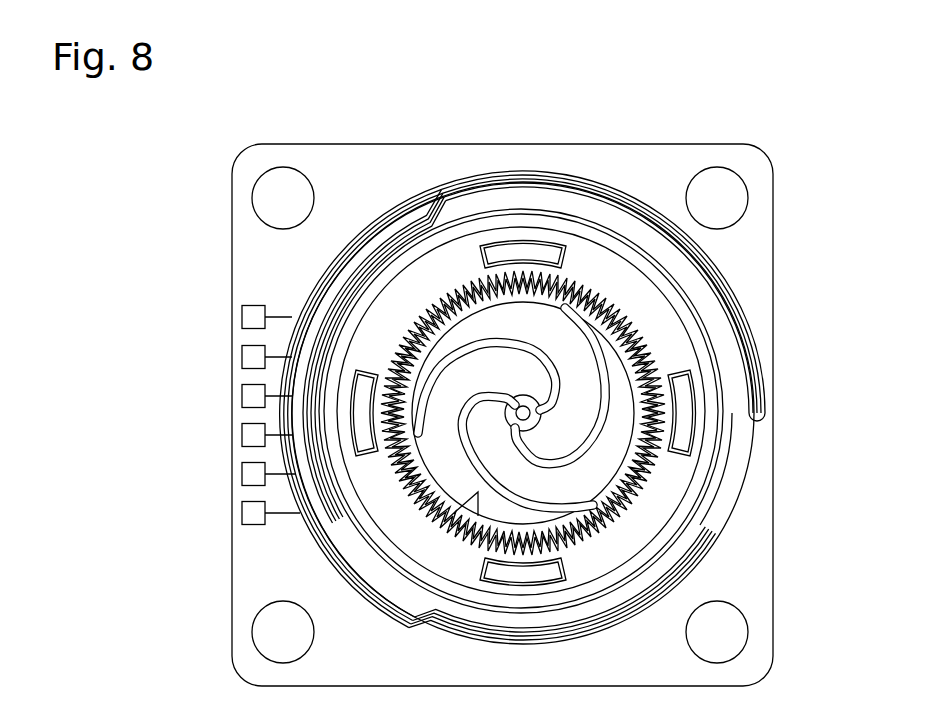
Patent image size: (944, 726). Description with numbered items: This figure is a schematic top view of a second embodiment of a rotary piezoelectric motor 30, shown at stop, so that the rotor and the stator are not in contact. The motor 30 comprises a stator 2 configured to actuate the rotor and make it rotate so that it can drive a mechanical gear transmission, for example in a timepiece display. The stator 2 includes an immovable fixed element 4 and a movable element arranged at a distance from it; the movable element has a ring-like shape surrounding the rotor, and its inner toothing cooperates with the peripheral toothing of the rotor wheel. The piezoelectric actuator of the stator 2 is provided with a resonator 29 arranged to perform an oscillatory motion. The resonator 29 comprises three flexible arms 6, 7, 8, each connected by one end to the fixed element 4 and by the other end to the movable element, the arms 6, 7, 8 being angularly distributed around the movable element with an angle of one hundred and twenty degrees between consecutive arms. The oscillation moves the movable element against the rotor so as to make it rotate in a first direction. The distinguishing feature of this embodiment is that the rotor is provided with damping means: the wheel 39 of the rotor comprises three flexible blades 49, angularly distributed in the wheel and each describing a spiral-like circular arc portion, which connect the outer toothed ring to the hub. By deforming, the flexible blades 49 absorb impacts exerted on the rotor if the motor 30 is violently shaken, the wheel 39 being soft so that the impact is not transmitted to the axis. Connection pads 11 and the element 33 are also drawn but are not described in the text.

The stator 2 is at (448, 130).
The fixed element 4 is at (521, 152).
The flexible arm 6 is at (518, 640).
The flexible arm 7 is at (743, 421).
The flexible arm 8 is at (560, 207).
The connection pads 11 is at (242, 513).
The resonator 29 is at (714, 534).
The piezoelectric motor 30 is at (830, 127).
The gear wheel 33 is at (648, 349).
The wheel 39 is at (652, 462).
The flexible blades 49 is at (505, 395).